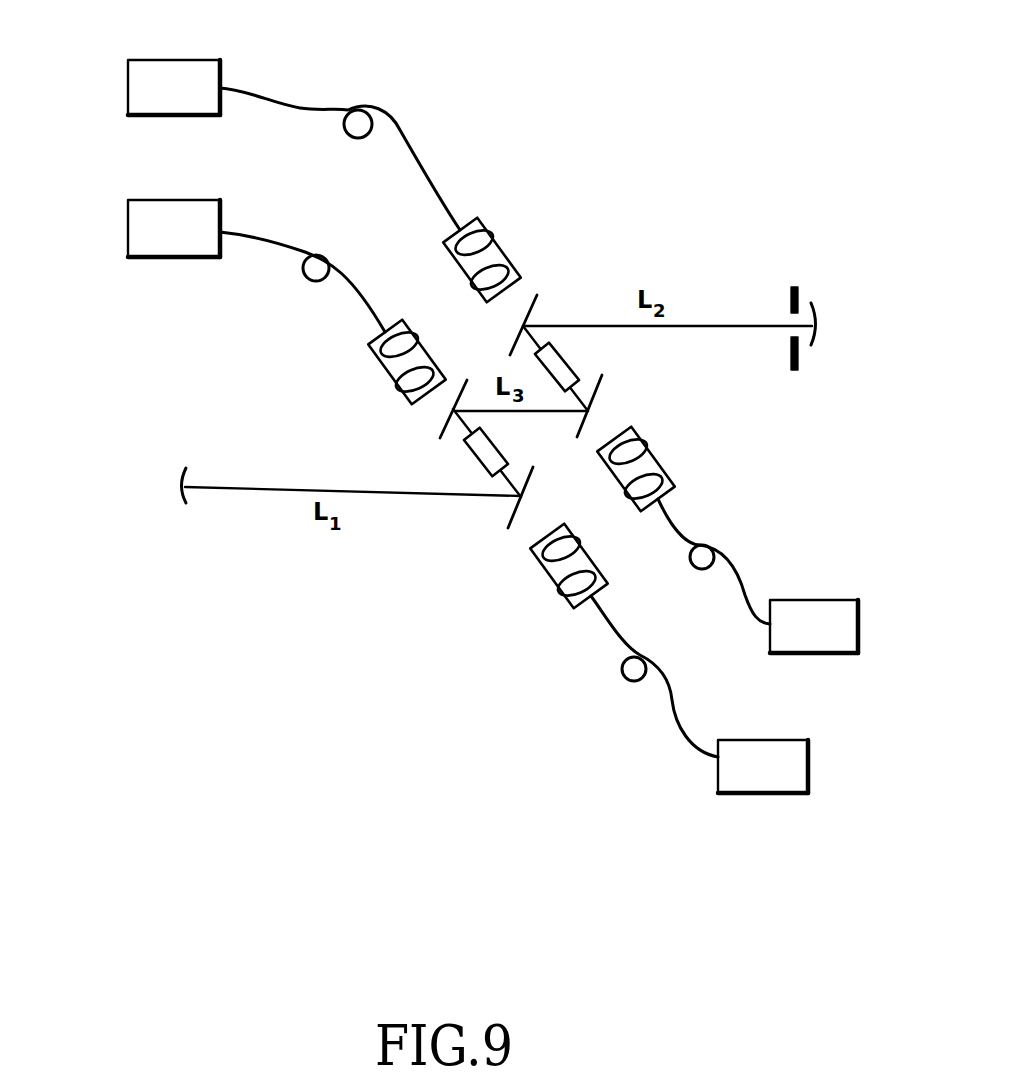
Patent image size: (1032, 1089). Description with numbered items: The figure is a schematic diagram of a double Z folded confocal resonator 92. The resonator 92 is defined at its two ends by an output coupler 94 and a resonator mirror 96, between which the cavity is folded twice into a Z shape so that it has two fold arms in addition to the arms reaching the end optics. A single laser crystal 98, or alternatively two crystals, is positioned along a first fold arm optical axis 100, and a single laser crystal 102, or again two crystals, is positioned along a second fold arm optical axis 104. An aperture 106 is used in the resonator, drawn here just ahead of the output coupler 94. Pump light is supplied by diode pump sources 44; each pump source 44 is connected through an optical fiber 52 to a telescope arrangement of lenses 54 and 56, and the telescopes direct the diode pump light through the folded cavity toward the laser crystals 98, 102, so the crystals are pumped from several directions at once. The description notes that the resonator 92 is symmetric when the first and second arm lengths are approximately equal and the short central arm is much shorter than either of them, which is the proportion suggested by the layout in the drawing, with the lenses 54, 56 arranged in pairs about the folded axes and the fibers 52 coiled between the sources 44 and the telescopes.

The diode pump source 44 is at (484, 465).
The optical fiber 52 is at (522, 412).
The lens 54 is at (519, 419).
The lens 56 is at (513, 413).
The double Z folded confocal resonator 92 is at (810, 260).
The output coupler 94 is at (849, 271).
The resonator mirror 96 is at (127, 534).
The laser crystal 98 is at (521, 436).
The first fold arm optical axis 100 is at (457, 495).
The laser crystal 102 is at (606, 286).
The second fold arm optical axis 104 is at (618, 367).
The aperture 106 is at (789, 292).